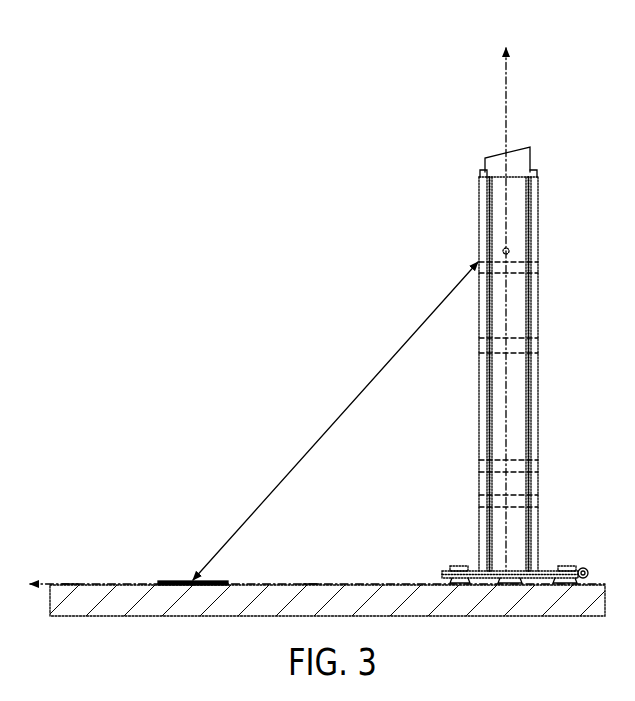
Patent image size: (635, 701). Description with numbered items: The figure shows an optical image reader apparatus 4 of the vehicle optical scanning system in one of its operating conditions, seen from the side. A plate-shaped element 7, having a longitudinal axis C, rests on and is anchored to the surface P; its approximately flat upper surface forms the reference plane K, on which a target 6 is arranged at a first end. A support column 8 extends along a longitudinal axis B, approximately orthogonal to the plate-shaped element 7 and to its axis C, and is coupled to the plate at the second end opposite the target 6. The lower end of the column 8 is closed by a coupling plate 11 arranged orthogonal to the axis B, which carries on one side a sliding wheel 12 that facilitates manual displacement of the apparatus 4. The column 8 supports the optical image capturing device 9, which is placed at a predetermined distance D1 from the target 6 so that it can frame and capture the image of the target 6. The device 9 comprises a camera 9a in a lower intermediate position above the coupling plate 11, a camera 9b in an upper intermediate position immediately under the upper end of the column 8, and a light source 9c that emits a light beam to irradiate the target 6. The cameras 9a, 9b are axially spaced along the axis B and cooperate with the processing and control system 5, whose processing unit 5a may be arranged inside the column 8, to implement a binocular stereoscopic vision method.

The optical image reader apparatus 4 is at (315, 345).
The processing and control system 5 is at (474, 503).
The processing unit 5a is at (440, 469).
The target 6 is at (172, 578).
The plate-shaped element 7 is at (347, 580).
The support column 8 is at (484, 215).
The optical image capturing device 9 is at (475, 295).
The camera 9a is at (474, 463).
The camera 9b is at (480, 262).
The light source 9c is at (545, 345).
The coupling plate 11 is at (440, 570).
The sliding wheel 12 is at (584, 566).
The longitudinal axis B is at (503, 65).
The longitudinal axis C is at (50, 584).
The surface P is at (70, 580).
The reference plane K is at (311, 580).
The predetermined distance D1 is at (335, 421).